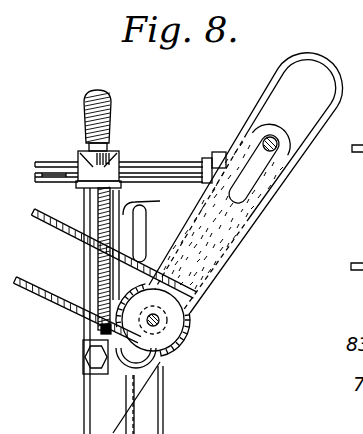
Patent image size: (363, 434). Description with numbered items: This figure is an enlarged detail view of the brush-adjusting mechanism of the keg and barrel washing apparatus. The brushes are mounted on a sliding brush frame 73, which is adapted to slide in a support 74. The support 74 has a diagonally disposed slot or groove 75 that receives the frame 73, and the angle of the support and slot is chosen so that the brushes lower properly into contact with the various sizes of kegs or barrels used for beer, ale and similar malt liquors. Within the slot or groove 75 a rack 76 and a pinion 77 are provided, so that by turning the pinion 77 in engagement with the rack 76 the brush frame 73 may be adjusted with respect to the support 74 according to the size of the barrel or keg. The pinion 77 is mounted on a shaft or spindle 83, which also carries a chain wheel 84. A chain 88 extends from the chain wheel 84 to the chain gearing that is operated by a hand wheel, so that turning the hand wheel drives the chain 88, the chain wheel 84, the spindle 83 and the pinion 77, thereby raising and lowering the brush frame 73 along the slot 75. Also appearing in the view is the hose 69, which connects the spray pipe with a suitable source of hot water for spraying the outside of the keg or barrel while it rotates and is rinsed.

The hose 69 is at (88, 200).
The brush frame 73 is at (262, 108).
The support 74 is at (256, 213).
The slot or groove 75 is at (287, 177).
The rack 76 is at (175, 266).
The pinion 77 is at (194, 311).
The shaft or spindle 83 is at (165, 349).
The chain wheel 84 is at (188, 331).
The chain 88 is at (58, 313).